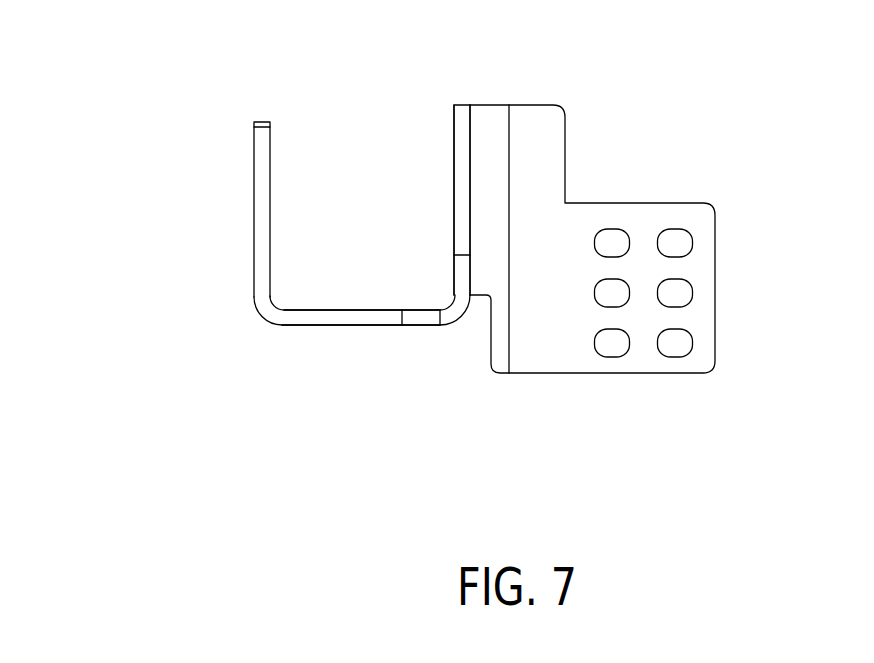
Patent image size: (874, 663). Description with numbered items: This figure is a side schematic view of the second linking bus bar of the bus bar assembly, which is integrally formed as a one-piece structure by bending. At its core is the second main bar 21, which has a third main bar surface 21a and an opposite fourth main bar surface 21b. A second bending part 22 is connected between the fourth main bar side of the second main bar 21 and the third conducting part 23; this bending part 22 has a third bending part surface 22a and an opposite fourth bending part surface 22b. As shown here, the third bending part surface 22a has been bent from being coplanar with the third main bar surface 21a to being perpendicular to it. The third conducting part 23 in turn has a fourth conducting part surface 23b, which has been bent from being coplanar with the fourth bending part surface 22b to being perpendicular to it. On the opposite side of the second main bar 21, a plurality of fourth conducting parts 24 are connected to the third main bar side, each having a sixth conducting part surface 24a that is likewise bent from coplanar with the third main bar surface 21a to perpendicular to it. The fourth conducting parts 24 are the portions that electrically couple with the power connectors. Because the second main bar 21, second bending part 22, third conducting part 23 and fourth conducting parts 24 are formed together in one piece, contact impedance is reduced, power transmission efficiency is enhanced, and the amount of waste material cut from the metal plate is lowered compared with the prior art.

The second main bar 21 is at (368, 335).
The third main bar surface 21a is at (362, 310).
The fourth main bar surface 21b is at (328, 327).
The second bending part 22 is at (458, 93).
The third bending part surface 22a is at (453, 147).
The fourth bending part surface 22b is at (470, 158).
The third conducting part 23 is at (720, 253).
The fourth conducting part surface 23b is at (647, 230).
The fourth conducting parts 24 is at (243, 153).
The sixth conducting part surface 24a is at (272, 157).